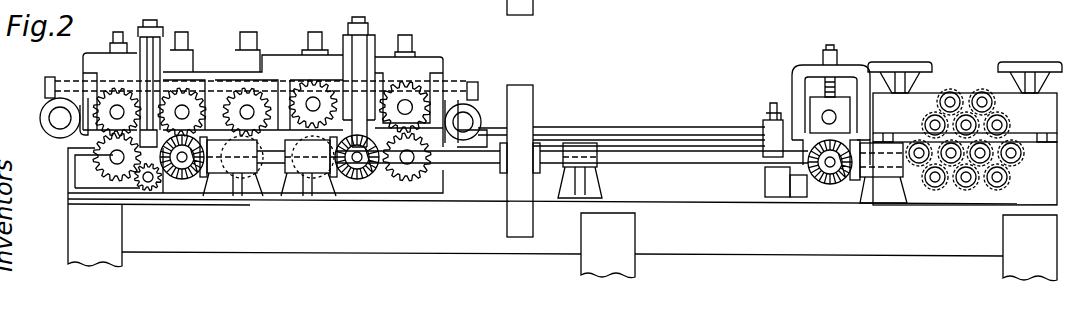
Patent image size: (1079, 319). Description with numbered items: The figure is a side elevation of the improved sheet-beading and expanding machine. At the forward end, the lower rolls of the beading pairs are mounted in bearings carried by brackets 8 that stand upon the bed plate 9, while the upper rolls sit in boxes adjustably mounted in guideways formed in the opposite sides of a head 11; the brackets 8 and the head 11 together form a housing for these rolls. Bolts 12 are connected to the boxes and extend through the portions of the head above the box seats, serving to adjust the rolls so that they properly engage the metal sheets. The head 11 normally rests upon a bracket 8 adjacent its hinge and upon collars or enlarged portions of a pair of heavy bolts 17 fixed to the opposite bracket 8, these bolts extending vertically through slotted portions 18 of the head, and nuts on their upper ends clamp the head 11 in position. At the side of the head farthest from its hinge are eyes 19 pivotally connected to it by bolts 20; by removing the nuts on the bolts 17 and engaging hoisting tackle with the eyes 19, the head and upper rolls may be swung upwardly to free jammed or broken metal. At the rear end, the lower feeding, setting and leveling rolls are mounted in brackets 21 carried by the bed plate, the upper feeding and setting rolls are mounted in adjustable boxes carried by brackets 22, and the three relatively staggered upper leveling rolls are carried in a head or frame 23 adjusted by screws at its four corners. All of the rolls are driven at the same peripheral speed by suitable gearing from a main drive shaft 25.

The brackets 8 is at (440, 191).
The bed plate 9 is at (372, 250).
The head 11 is at (210, 60).
The bolts 12 is at (304, 50).
The heavy bolts 17 is at (150, 50).
The slotted portions 18 is at (137, 62).
The eyes 19 is at (58, 136).
The bolts 20 is at (48, 78).
The brackets 21 is at (765, 184).
The brackets 22 is at (798, 82).
The head or frame 23 is at (922, 100).
The main drive shaft 25 is at (649, 160).